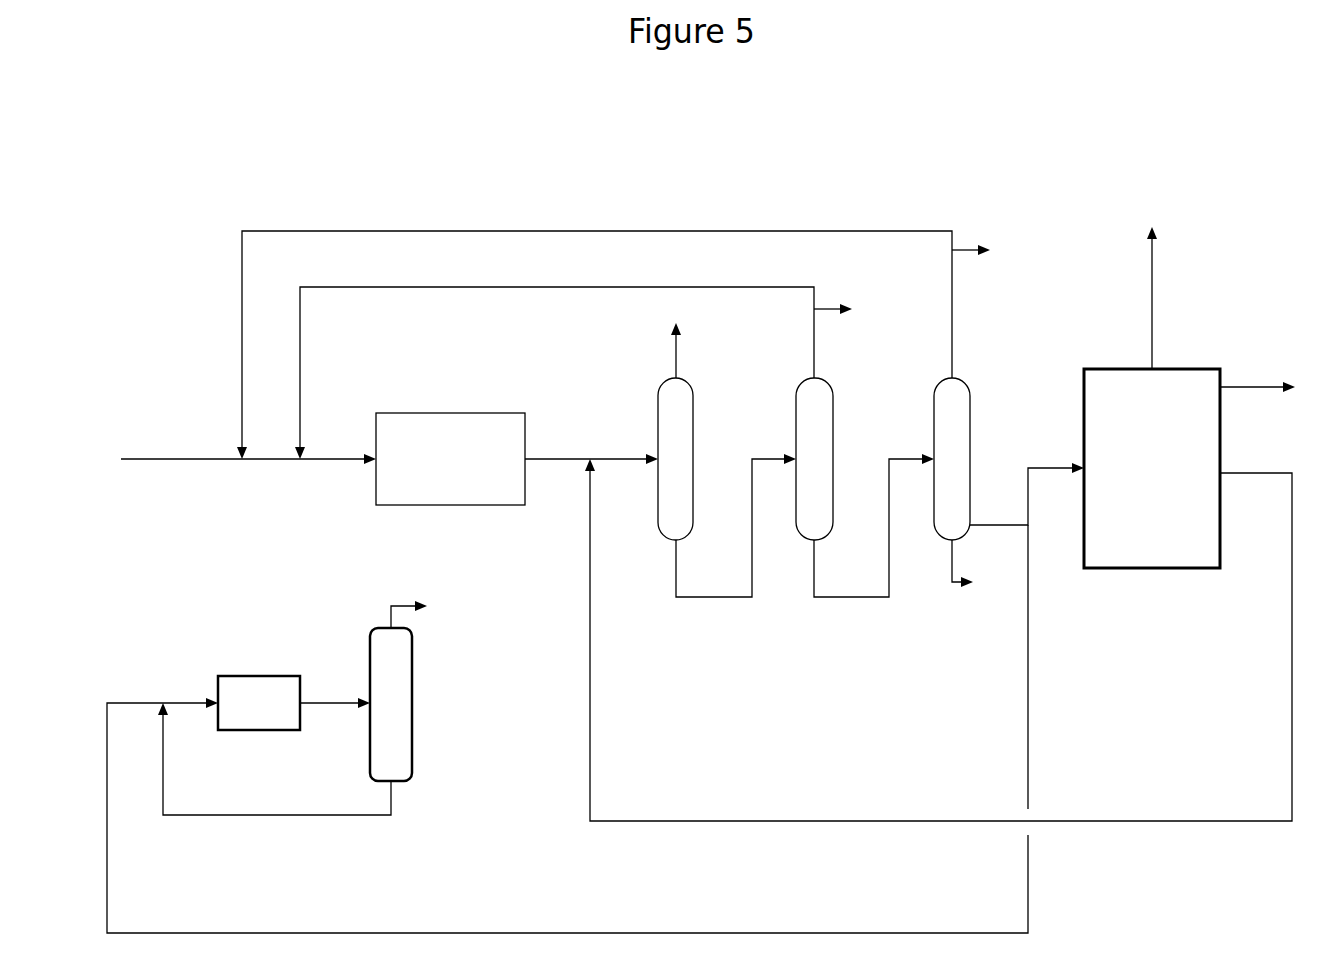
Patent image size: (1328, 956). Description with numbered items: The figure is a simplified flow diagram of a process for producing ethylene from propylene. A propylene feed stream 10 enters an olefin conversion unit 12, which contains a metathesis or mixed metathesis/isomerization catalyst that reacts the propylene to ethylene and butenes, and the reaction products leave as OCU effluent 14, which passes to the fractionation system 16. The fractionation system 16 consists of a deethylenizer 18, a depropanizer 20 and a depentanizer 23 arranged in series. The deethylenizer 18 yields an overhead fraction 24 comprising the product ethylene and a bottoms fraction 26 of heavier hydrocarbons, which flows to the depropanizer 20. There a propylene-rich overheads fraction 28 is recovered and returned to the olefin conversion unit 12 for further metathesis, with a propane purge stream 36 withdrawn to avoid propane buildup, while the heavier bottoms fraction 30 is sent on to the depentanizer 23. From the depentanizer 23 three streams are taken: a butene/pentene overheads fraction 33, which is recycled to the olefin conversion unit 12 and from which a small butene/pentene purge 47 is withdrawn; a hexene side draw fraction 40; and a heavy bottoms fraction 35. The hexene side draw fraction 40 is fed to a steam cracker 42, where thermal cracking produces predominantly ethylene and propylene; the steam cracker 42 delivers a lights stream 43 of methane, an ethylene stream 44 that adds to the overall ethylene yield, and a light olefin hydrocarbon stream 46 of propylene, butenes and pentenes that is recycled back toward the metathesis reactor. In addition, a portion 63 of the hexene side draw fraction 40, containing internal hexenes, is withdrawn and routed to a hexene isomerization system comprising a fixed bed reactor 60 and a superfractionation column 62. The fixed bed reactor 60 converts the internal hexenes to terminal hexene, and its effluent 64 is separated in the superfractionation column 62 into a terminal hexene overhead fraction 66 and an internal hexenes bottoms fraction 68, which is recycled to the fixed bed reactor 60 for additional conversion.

The propylene feed stream 10 is at (245, 446).
The olefin conversion unit 12 is at (450, 459).
The OCU effluent 14 is at (591, 445).
The fractionation system 16 is at (796, 676).
The deethylenizer 18 is at (675, 459).
The depropanizer 20 is at (814, 459).
The depentanizer 23 is at (952, 459).
The overhead fraction 24 is at (665, 350).
The bottoms fraction 26 is at (723, 525).
The C3 overheads fraction 28 is at (554, 373).
The C4+ bottoms fraction 30 is at (874, 525).
The C4/C5 overheads fraction 33 is at (594, 345).
The C6+ bottoms fraction 35 is at (980, 567).
The C3 purge stream 36 is at (846, 310).
The C6 side draw fraction 40 is at (1027, 494).
The steam cracker 42 is at (1152, 468).
The lights stream 43 is at (1257, 376).
The ethylene stream 44 is at (1164, 298).
The C3-C5 hydrocarbon stream 46 is at (938, 631).
The C4/C5 purge 47 is at (984, 252).
The fixed bed reactor 60 is at (259, 703).
The superfractionation column 62 is at (391, 704).
The portion of the C6 side draw fraction 63 is at (584, 729).
The effluent 64 is at (335, 694).
The 1-hexenes overhead fraction 66 is at (422, 612).
The 2- and 3-hexenes bottoms fraction 68 is at (274, 759).